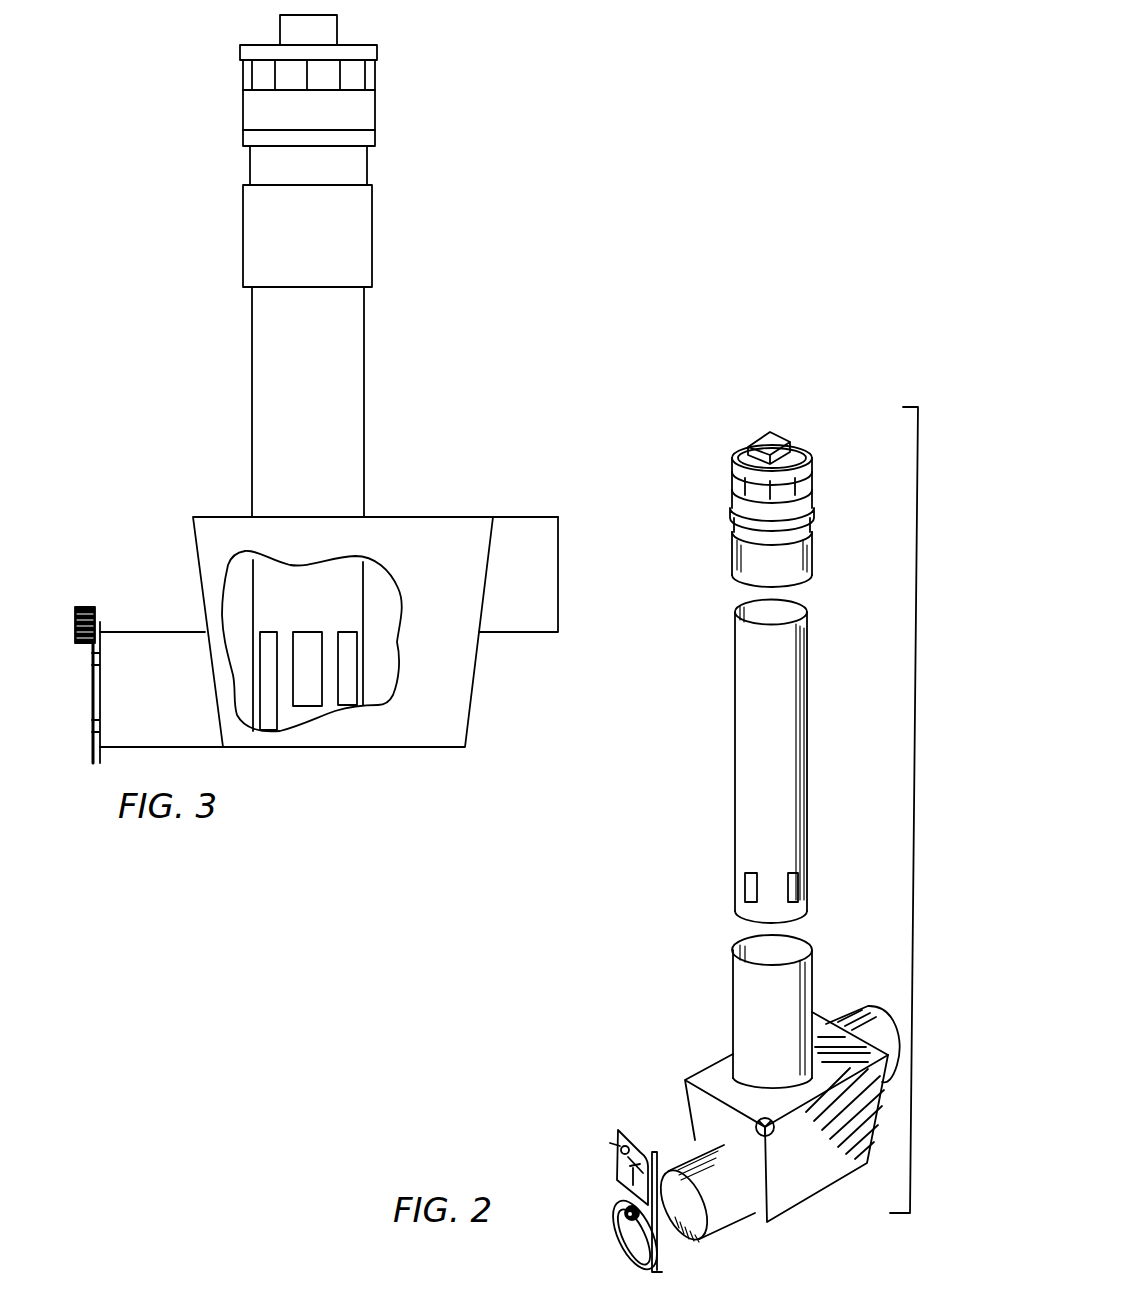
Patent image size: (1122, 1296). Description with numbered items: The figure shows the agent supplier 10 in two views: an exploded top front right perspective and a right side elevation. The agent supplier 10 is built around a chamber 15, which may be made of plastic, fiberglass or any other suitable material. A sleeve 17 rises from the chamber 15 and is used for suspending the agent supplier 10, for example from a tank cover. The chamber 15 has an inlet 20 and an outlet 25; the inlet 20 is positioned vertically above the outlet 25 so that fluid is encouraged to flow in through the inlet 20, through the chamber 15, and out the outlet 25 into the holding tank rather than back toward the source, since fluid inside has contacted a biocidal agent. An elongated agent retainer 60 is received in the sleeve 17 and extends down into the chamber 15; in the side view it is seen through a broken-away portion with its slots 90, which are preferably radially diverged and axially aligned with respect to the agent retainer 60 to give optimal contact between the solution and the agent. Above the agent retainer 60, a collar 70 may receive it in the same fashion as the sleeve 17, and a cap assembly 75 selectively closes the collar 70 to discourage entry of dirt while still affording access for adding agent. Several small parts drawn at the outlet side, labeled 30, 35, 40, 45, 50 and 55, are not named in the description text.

In FIG. 2, the agent supplier 10 is at (914, 757).
In FIG. 3, the chamber 15 is at (410, 517).
In FIG. 2, the chamber 15 is at (710, 1067).
In FIG. 2, the sleeve 17 is at (733, 984).
In FIG. 3, the inlet 20 is at (558, 530).
In FIG. 2, the inlet 20 is at (840, 1018).
In FIG. 3, the outlet 25 is at (110, 632).
In FIG. 2, the outlet 25 is at (693, 1163).
In FIG. 3, the adjustment knob 30 is at (92, 670).
In FIG. 2, the adjustment knob 30 is at (663, 1260).
In FIG. 2, the clip 35 is at (620, 1130).
In FIG. 2, the ring 40 is at (612, 1210).
In FIG. 3, the plate 45 is at (96, 750).
In FIG. 2, the knob 50 is at (626, 1207).
In FIG. 2, the pin 55 is at (612, 1143).
In FIG. 2, the agent retainer 60 is at (735, 752).
In FIG. 2, the collar 70 is at (732, 555).
In FIG. 2, the cap assembly 75 is at (745, 452).
In FIG. 3, the slots 90 is at (300, 645).